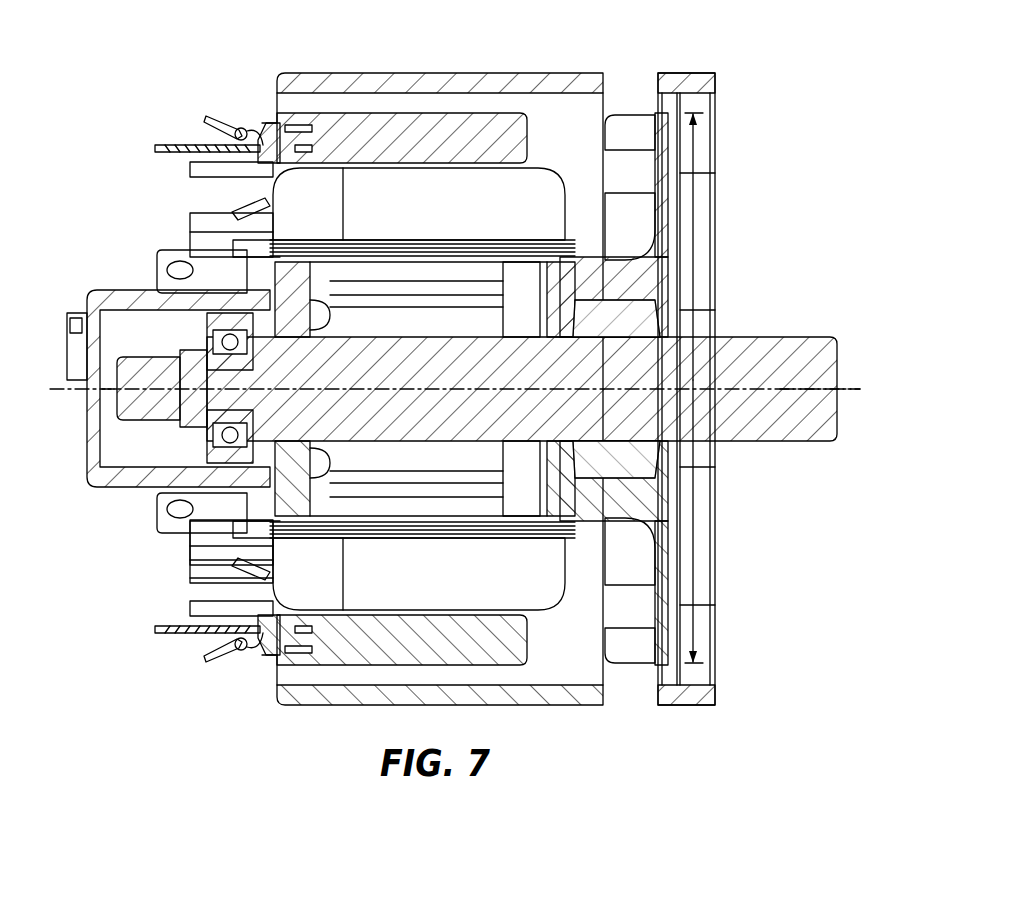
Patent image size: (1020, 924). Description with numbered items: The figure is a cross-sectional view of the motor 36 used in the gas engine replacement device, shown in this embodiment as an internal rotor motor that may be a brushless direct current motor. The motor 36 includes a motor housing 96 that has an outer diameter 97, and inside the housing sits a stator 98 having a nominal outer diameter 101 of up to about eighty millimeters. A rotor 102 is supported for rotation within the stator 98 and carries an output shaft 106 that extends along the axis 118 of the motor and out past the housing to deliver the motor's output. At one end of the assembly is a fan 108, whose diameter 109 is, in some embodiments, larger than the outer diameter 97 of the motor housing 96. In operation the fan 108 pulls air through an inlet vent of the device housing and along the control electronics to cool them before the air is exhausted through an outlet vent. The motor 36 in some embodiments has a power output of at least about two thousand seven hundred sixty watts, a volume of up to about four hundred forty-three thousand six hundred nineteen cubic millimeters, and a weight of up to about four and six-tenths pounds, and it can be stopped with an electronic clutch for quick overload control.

The motor 36 is at (473, 366).
The motor housing 96 is at (333, 83).
The outer diameter 97 is at (553, 704).
The stator 98 is at (294, 166).
The nominal outer diameter 101 is at (478, 664).
The rotor 102 is at (326, 316).
The output shaft 106 is at (775, 436).
The fan 108 is at (630, 183).
The diameter 109 is at (694, 233).
The rotational axis 118 is at (846, 386).